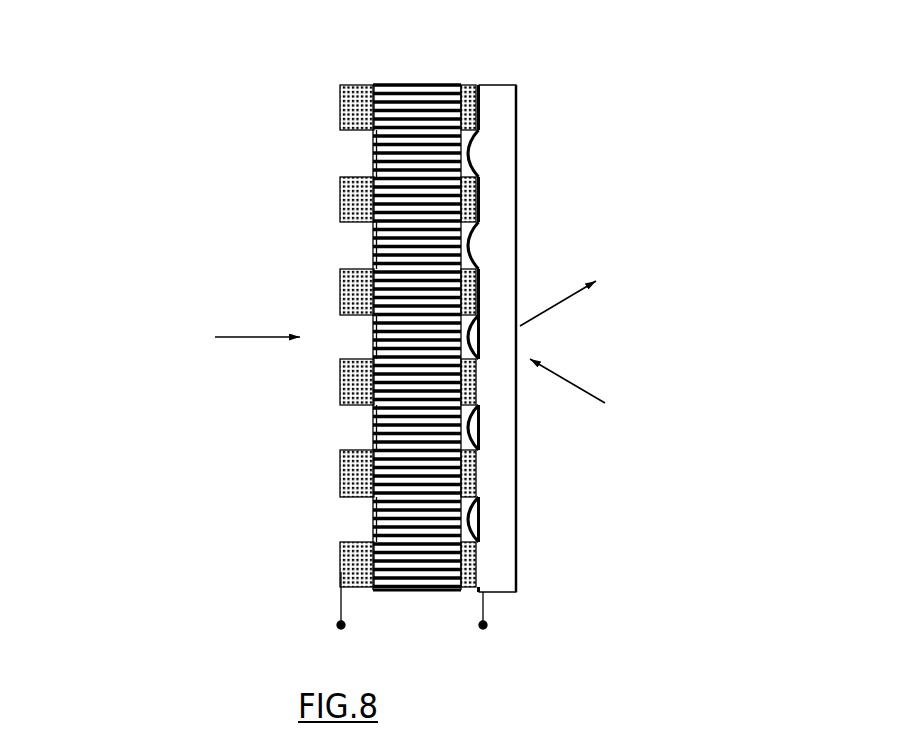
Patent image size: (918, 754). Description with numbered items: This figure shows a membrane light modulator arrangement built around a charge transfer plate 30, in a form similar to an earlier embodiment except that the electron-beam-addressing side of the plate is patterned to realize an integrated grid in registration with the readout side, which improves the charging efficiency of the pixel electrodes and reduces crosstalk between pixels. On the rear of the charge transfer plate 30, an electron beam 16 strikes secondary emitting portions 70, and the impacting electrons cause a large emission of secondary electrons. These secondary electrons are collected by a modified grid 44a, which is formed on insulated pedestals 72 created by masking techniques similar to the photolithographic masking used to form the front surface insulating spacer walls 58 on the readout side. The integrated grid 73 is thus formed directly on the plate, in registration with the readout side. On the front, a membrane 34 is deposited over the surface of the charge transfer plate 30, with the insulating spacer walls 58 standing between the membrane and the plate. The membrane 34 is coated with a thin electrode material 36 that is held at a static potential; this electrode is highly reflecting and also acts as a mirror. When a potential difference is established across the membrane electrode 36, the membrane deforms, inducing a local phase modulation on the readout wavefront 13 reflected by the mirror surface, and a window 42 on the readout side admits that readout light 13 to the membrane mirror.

The front surface insulating spacer walls 58 is at (468, 100).
The modified grid 44a is at (337, 199).
The electron beam 16 is at (204, 325).
The insulated pedestals 72 is at (354, 406).
The secondary emitting portions 70 is at (368, 520).
The integrated grid 73 is at (337, 573).
The charge transfer plate 30 is at (418, 600).
The membrane 34 is at (477, 596).
The membrane electrode 36 is at (480, 522).
The window 42 is at (491, 577).
The readout wavefront 13 is at (620, 366).